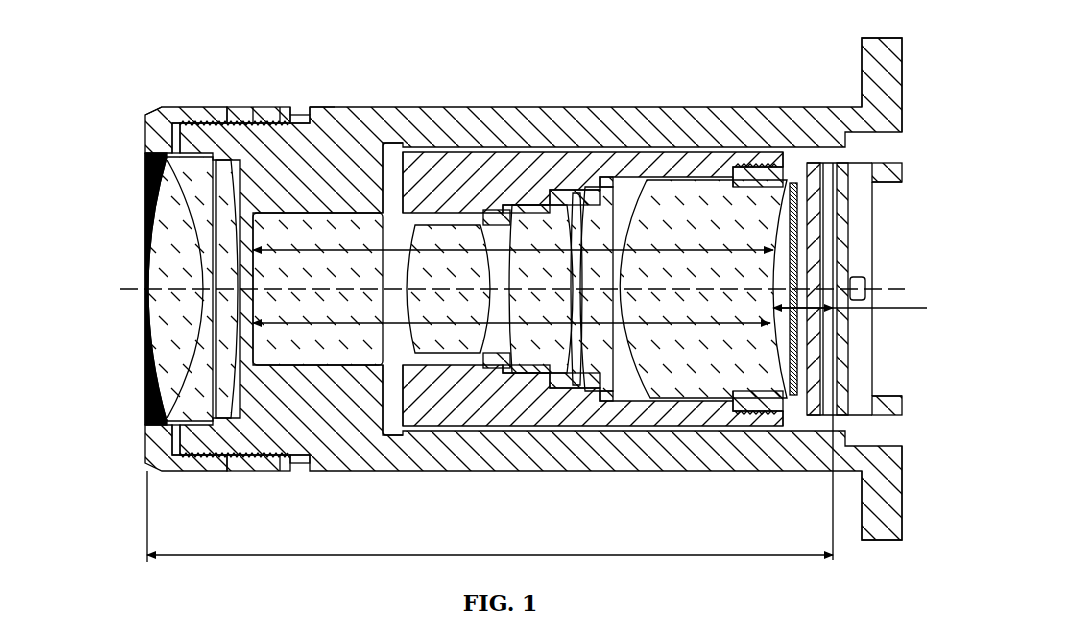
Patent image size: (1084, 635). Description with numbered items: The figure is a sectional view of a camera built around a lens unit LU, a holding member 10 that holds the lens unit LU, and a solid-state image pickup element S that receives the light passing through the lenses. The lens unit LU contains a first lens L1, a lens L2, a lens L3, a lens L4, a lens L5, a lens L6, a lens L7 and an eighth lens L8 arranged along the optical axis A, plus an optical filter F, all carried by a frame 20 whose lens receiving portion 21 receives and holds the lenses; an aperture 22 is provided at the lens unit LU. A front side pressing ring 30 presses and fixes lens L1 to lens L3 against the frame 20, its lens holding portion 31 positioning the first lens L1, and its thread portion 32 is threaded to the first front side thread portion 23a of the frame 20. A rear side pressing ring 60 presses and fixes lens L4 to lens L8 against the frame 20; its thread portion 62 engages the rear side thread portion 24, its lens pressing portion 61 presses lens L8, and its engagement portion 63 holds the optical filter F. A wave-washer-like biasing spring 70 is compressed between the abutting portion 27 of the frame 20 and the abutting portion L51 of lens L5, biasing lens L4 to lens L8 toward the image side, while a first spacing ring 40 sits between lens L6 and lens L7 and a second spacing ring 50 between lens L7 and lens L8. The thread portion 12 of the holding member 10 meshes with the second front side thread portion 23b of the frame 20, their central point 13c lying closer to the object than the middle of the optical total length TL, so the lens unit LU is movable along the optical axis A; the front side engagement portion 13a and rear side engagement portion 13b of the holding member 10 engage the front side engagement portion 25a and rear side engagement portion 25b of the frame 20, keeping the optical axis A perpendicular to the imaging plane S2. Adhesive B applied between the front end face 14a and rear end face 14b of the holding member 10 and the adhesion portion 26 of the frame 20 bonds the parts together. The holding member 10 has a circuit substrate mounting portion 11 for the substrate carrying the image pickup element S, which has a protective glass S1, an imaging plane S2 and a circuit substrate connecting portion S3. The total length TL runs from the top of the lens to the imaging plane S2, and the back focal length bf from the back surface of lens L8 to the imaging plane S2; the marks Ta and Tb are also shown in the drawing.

The holding member 10 is at (580, 108).
The circuit substrate mounting portion 11 is at (900, 50).
The thread portion 12 is at (268, 115).
The front side engagement portion 13a is at (385, 152).
The rear side engagement portion 13b is at (768, 163).
The central point of the meshing portion 13c is at (255, 122).
The front end face of the adhesion portion 14a is at (293, 117).
The rear end face of the adhesion portion 14b is at (313, 119).
The frame 20 is at (480, 213).
The lens receiving portion 21 is at (187, 272).
The aperture 22 is at (405, 210).
The first front side thread portion 23a is at (203, 122).
The second front side thread portion 23b is at (240, 122).
The rear side thread portion 24 is at (756, 168).
The front side engagement portion 25a is at (390, 146).
The rear side engagement portion 25b is at (750, 172).
The adhesion portion 26 is at (323, 117).
The abutting portion 27 is at (507, 207).
The front side pressing ring 30 is at (170, 108).
The lens holding portion 31 is at (143, 140).
The thread portion 32 is at (177, 123).
The first spacing ring 40 is at (592, 180).
The second spacing ring 50 is at (627, 178).
The rear side pressing ring 60 is at (847, 134).
The lens pressing portion 61 is at (730, 170).
The thread portion 62 is at (797, 155).
The engagement portion 63 is at (875, 181).
The biasing spring 70 is at (545, 207).
The optical axis A is at (125, 290).
The adhesive B is at (308, 115).
The optical filter F is at (791, 400).
The solid-state image pickup element S is at (828, 416).
The protective glass S1 is at (813, 416).
The imaging plane S2 is at (843, 330).
The circuit substrate connecting portion S3 is at (852, 322).
The first lens L1 is at (185, 425).
The lens L2 is at (225, 420).
The lens L3 is at (270, 366).
The lens L4 is at (450, 355).
The abutting portion of lens L5 L51 is at (490, 368).
The lens L5 is at (505, 375).
The lens L6 is at (578, 387).
The lens L7 is at (608, 392).
The eighth lens L8 is at (704, 400).
The lens unit LU is at (110, 400).
The optical total length TL is at (459, 516).
The back focal length bf is at (850, 298).
The upper thickness Ta is at (513, 243).
The lower thickness Tb is at (511, 318).